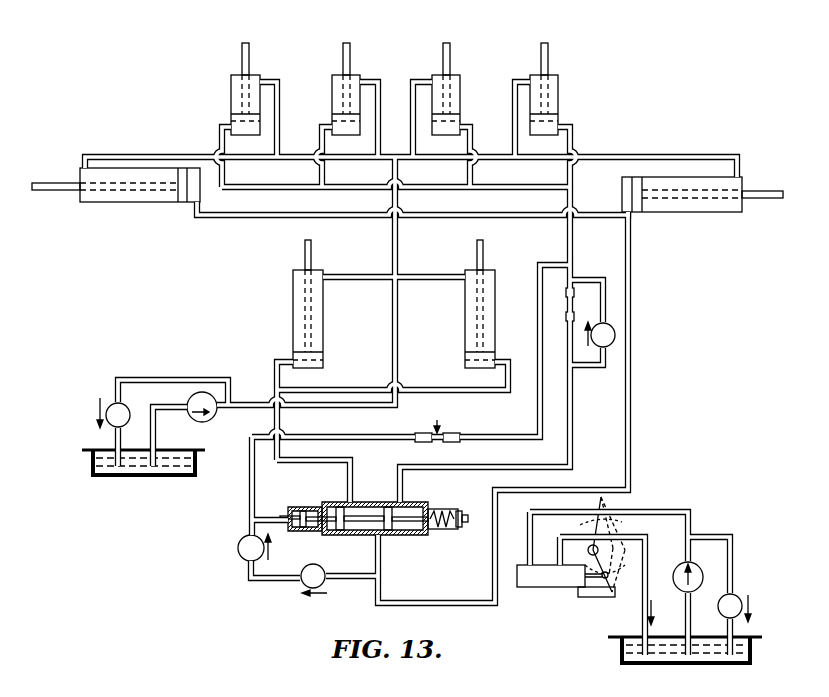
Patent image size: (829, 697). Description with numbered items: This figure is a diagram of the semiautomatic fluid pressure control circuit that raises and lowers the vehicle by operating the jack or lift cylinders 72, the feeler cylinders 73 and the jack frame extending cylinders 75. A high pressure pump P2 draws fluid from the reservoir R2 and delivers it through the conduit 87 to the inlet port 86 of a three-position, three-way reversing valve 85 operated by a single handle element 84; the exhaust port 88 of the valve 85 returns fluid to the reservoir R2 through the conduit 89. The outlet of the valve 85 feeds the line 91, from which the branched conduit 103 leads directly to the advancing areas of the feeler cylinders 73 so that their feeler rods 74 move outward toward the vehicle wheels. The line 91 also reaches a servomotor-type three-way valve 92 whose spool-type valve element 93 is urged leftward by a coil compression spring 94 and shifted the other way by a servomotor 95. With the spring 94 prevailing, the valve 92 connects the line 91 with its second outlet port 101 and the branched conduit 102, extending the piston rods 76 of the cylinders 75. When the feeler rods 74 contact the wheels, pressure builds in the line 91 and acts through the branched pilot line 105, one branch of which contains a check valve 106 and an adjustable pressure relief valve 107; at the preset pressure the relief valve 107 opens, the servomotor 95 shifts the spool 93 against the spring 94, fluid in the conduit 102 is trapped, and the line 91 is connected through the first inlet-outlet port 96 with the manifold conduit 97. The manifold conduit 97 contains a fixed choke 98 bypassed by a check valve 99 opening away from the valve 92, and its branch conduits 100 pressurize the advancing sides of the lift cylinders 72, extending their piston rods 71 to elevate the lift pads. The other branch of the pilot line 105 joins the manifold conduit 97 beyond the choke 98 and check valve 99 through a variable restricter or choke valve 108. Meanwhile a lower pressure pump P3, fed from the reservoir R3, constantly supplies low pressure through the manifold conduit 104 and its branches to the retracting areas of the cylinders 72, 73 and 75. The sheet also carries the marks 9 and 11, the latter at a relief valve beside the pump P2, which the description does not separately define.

The piston rod 71 is at (248, 52).
The jack or lift cylinder 72 is at (332, 82).
The feeler cylinder 73 is at (143, 205).
The feeler rod 74 is at (48, 182).
The jack frame extending cylinder 75 is at (292, 318).
The piston rod 76 is at (305, 256).
The control handle 84 is at (600, 530).
The three-position, three-way reversing valve 85 is at (568, 588).
The inlet port 86 is at (517, 567).
The conduit 87 is at (650, 511).
The exhaust port 88 is at (557, 562).
The conduit 89 is at (648, 556).
The lever 9 is at (532, 590).
The line 91 is at (500, 604).
The servomotor-type three-way valve 92 is at (415, 504).
The spool-type valve element 93 is at (364, 532).
The coil compression spring 94 is at (432, 504).
The servomotor 95 is at (301, 510).
The first inlet-outlet port 96 is at (402, 504).
The manifold conduit 97 is at (575, 396).
The fixed choke 98 is at (581, 305).
The check valve 99 is at (616, 334).
The branch conduits 100 is at (219, 138).
The second motor or outlet port 101 is at (354, 506).
The branched conduit 102 is at (275, 375).
The branched conduit 103 is at (632, 370).
The manifold conduit 104 is at (392, 344).
The branched pilot line 105 is at (250, 520).
The check valve 106 is at (236, 542).
The adjustable pressure relief valve 107 is at (300, 580).
The variable restricter or choke valve 108 is at (433, 442).
The high pressure pump P2 is at (704, 571).
The low pressure pump P3 is at (212, 420).
The reservoir R2 is at (692, 666).
The reservoir R3 is at (124, 477).
The relief valve 11 is at (742, 598).